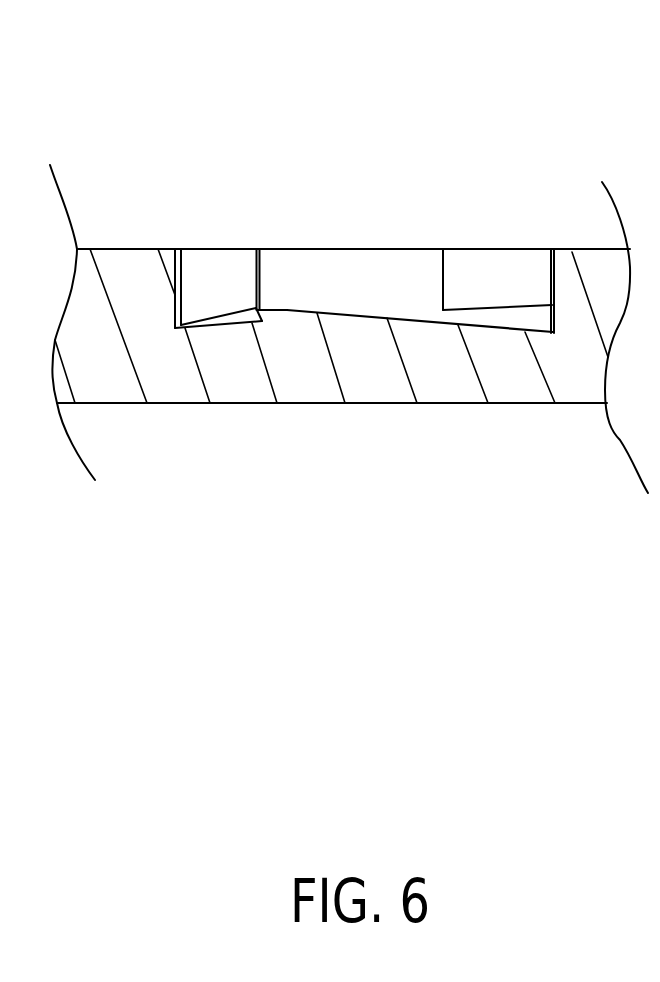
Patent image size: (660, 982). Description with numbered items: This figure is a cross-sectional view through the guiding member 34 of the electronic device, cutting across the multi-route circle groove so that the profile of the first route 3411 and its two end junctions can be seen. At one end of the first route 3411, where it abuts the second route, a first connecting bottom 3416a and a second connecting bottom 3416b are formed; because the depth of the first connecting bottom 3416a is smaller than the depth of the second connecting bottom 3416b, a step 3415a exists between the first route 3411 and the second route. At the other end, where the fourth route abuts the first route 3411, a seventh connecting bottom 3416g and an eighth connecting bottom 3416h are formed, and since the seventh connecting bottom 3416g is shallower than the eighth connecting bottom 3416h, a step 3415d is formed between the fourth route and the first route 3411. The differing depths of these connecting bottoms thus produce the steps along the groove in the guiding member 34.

The guiding member 34 is at (128, 255).
The first route 3411 is at (410, 317).
The step 3415a is at (263, 310).
The step 3415d is at (553, 250).
The first connecting bottom 3416a is at (287, 310).
The second connecting bottom 3416b is at (260, 327).
The seventh connecting bottom 3416g is at (538, 317).
The eighth connecting bottom 3416h is at (520, 332).